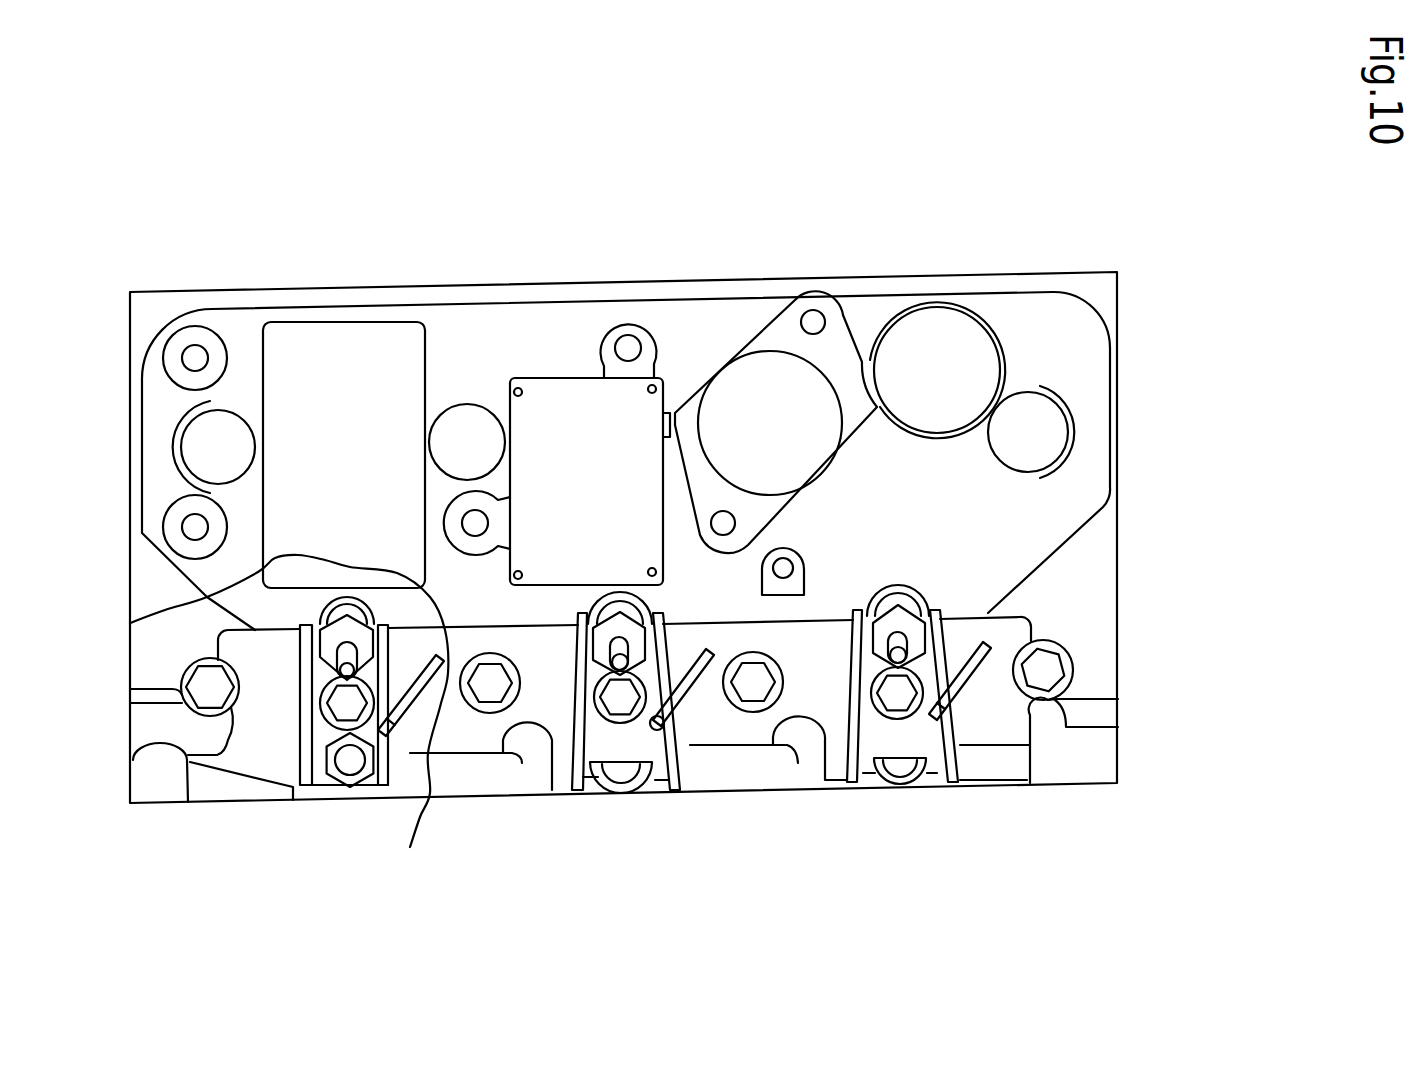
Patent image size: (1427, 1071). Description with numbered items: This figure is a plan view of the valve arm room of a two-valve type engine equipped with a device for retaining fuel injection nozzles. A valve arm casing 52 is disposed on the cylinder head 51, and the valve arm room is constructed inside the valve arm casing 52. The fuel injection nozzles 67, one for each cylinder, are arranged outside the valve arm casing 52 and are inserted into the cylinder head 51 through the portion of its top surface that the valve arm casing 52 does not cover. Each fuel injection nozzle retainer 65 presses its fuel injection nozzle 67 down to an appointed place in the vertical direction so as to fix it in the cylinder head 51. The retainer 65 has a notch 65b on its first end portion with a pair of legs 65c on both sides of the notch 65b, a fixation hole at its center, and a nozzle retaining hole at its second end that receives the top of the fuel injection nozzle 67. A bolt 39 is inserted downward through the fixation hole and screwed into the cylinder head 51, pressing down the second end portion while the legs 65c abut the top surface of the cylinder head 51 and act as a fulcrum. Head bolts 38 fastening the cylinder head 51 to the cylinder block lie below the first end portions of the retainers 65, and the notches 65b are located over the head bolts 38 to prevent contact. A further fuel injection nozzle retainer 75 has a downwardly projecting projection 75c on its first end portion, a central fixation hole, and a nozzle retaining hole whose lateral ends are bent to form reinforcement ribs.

The cylinder head 51 is at (1123, 583).
The valve arm casing 52 is at (468, 327).
The fuel injection nozzle 67 is at (340, 637).
The bolt 39 is at (337, 702).
The fuel injection nozzle retainer 65 is at (687, 740).
The notch 65b is at (602, 783).
The leg 65c is at (583, 788).
The head bolt 38 is at (617, 767).
The fuel injection nozzle retainer 75 is at (387, 765).
The projection 75c is at (347, 760).